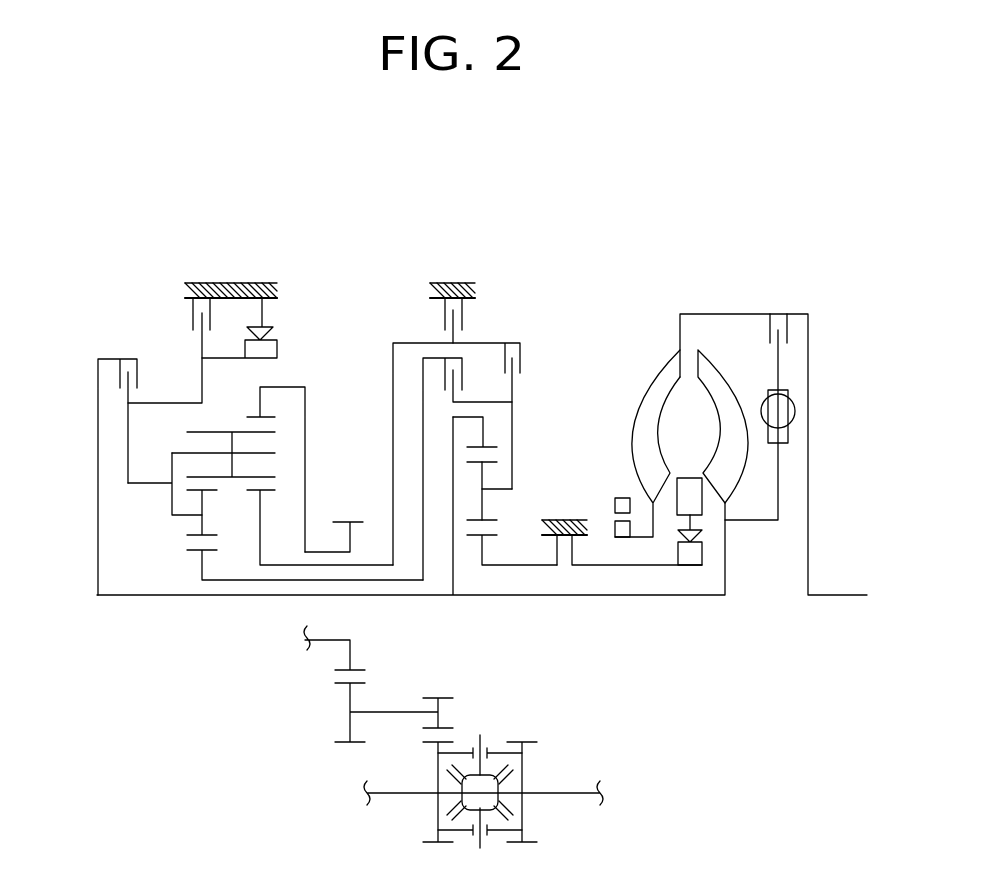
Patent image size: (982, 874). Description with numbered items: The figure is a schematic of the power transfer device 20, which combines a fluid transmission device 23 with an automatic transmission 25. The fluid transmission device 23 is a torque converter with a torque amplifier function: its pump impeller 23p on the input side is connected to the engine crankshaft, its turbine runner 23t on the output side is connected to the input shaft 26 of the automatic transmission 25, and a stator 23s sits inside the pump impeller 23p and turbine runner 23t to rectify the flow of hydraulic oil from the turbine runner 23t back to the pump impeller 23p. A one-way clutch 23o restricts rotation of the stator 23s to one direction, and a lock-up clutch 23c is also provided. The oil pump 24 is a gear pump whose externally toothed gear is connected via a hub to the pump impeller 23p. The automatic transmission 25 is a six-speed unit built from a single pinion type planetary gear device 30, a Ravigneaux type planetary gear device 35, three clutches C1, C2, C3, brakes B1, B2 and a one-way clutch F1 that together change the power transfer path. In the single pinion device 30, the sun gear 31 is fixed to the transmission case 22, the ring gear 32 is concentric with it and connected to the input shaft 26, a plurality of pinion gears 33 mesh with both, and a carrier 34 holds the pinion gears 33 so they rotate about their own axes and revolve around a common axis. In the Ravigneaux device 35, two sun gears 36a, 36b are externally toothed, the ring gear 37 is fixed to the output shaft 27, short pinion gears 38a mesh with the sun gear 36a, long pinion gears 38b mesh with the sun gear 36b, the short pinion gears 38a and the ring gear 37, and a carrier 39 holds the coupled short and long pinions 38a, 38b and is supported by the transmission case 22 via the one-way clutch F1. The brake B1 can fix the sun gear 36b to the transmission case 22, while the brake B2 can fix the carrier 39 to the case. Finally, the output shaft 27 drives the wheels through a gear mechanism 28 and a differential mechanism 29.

The power transfer device 20 is at (567, 251).
The transmission case 22 is at (210, 284).
The fluid transmission device 23 is at (667, 342).
The pump impeller 23p is at (657, 378).
The turbine runner 23t is at (733, 377).
The lock-up clutch 23c is at (791, 361).
The stator 23s is at (713, 516).
The one-way clutch 23o is at (709, 559).
The oil pump 24 is at (600, 537).
The automatic transmission 25 is at (357, 315).
The input shaft 26 is at (640, 597).
The output shaft 27 is at (323, 548).
The gear mechanism 28 is at (337, 691).
The differential mechanism 29 is at (546, 757).
The single pinion type planetary gear device 30 is at (541, 427).
The sun gear 31 is at (478, 541).
The ring gear 32 is at (515, 430).
The pinion gears 33 is at (487, 500).
The carrier 34 is at (515, 448).
The Ravigneaux type planetary gear device 35 is at (166, 548).
The sun gear 36a is at (200, 556).
The sun gear 36b is at (257, 495).
The ring gear 37 is at (300, 410).
The short pinion gears 38a is at (197, 521).
The long pinion gears 38b is at (190, 433).
The carrier 39 is at (128, 447).
The brake B1 is at (465, 318).
The brake B2 is at (192, 318).
The clutch C1 is at (443, 375).
The clutch C2 is at (112, 377).
The clutch C3 is at (515, 365).
The one-way clutch F1 is at (278, 352).